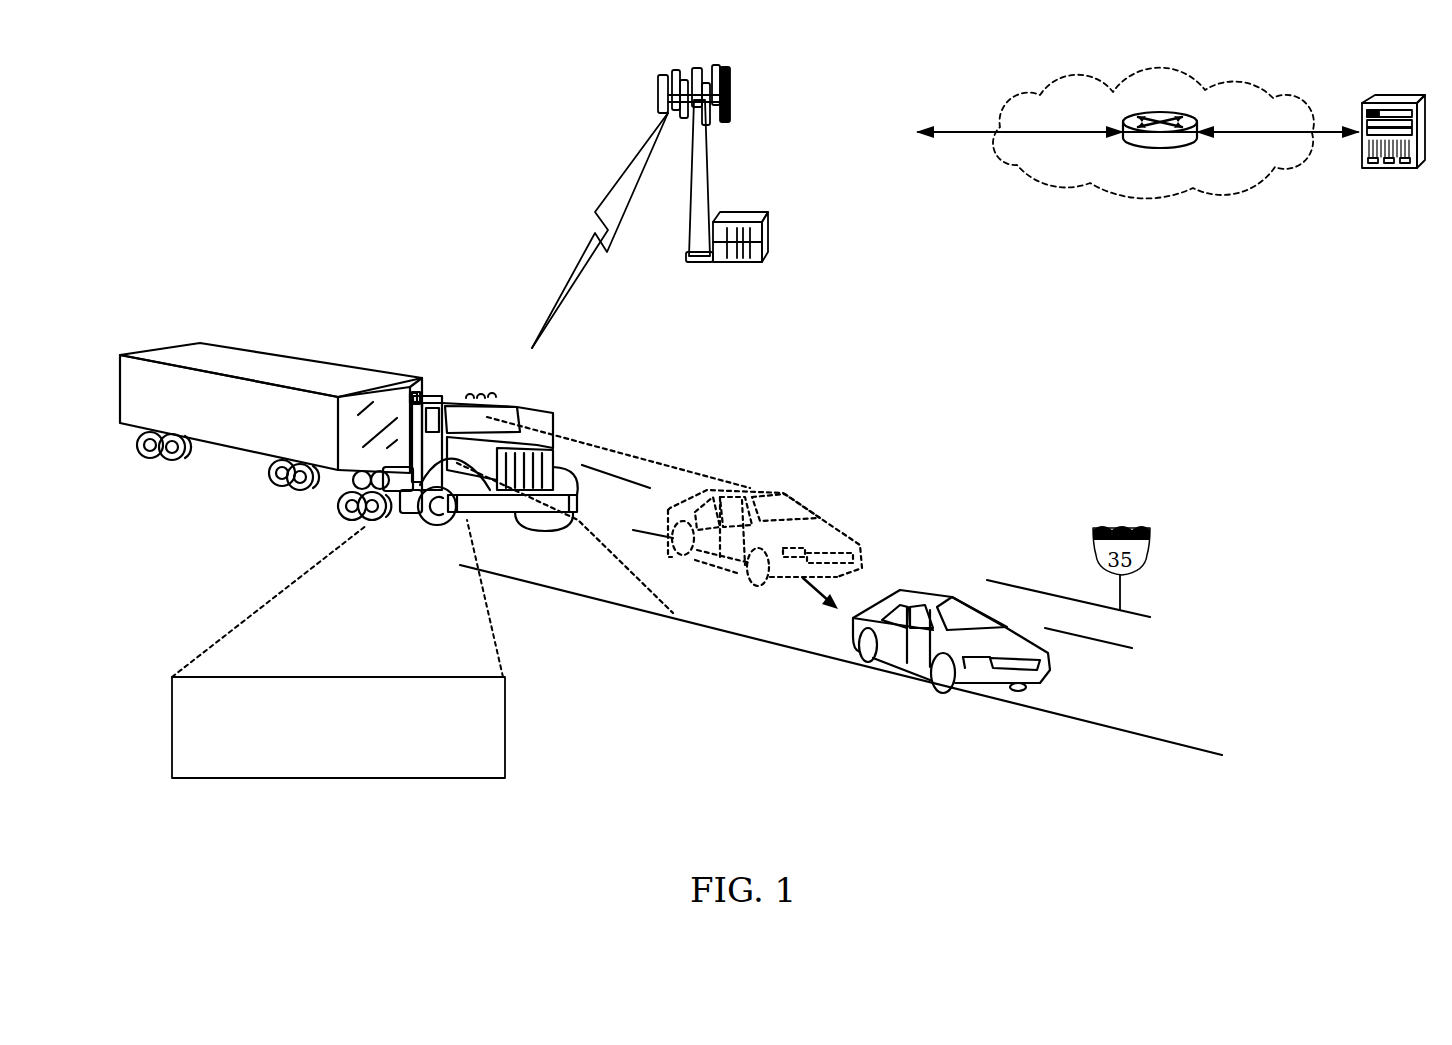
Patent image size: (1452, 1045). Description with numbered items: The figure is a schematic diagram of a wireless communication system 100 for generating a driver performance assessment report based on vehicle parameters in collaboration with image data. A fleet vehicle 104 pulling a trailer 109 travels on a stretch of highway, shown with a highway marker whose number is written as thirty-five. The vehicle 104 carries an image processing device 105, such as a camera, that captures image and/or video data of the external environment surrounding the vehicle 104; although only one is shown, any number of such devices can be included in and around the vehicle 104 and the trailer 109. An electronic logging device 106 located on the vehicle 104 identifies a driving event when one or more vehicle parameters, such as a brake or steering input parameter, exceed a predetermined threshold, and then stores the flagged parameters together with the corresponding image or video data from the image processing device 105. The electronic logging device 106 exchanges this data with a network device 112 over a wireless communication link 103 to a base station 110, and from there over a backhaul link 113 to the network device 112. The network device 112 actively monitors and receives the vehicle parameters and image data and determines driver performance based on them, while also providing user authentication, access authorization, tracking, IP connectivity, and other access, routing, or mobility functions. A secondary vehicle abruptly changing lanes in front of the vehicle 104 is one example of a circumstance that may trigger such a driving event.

The wireless communication system 100 is at (176, 70).
The wireless communication link 103 is at (626, 189).
The fleet vehicle 104 is at (500, 498).
The image processing device 105 is at (462, 403).
The electronic logging device (ELD) 106 is at (319, 772).
The trailer 109 is at (218, 347).
The base station 110 is at (765, 253).
The network device 112 is at (1390, 168).
The backhaul link 113 is at (958, 133).